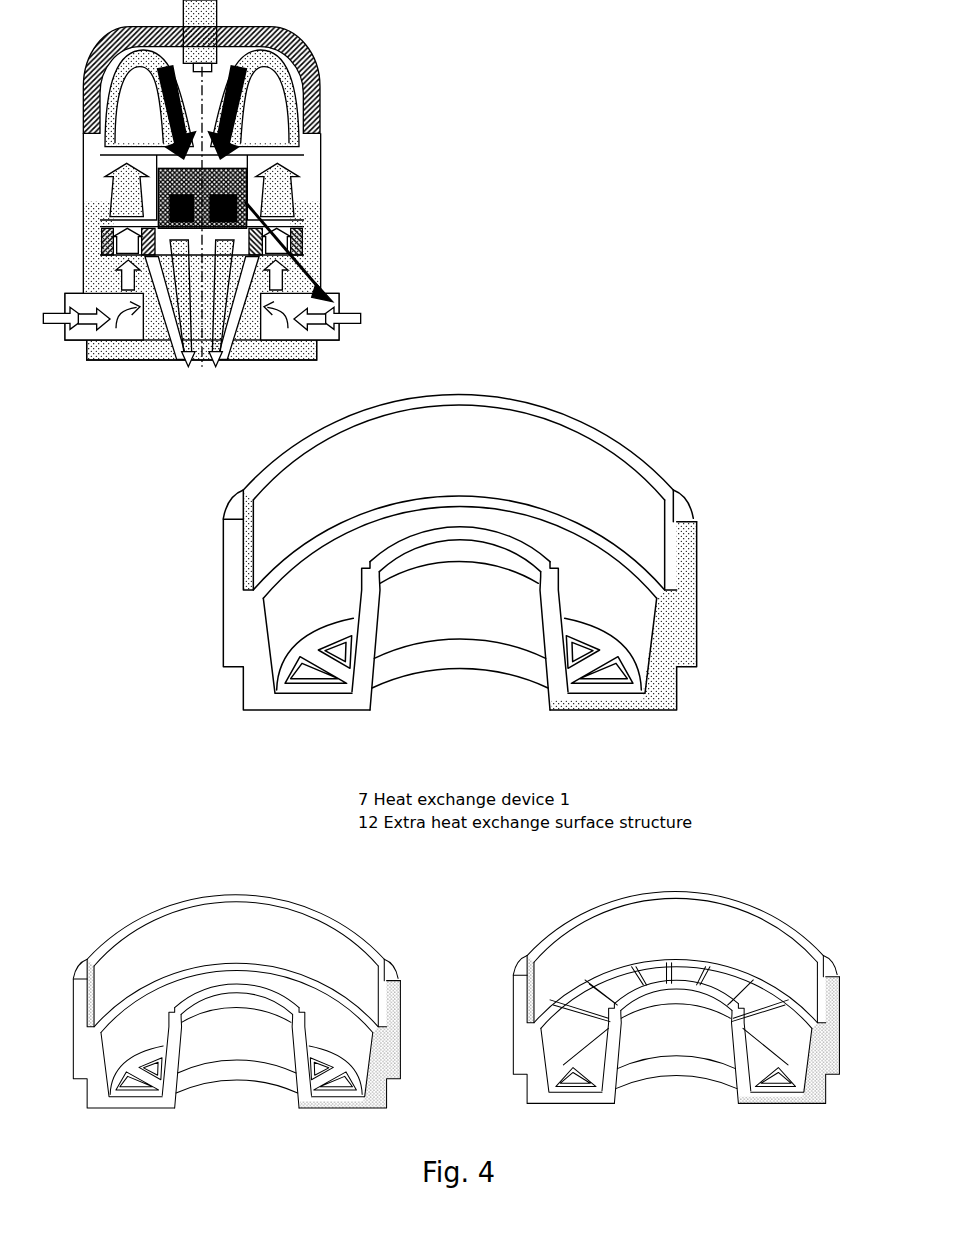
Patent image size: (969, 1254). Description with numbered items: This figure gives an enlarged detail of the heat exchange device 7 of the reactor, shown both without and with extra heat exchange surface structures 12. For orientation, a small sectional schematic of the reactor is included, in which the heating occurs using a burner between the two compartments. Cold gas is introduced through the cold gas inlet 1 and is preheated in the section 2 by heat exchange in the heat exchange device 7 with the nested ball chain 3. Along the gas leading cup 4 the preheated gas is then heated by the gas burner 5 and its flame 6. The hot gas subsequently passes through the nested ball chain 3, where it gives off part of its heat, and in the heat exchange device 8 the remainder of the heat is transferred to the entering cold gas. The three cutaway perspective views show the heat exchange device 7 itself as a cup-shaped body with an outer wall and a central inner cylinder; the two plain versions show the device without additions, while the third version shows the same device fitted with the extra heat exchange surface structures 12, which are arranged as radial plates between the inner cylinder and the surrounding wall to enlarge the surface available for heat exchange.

The cold gas inlet 1 is at (64, 277).
The section 2 is at (83, 178).
The nested ball chain 3 is at (101, 161).
The gas leading cup 4 is at (65, 83).
The gas burner 5 is at (86, 28).
The flame 6 is at (274, 58).
The heat exchange device 7 is at (660, 655).
The heat exchange device 8 is at (292, 291).
The extra heat exchange surface structure 12 is at (582, 1053).